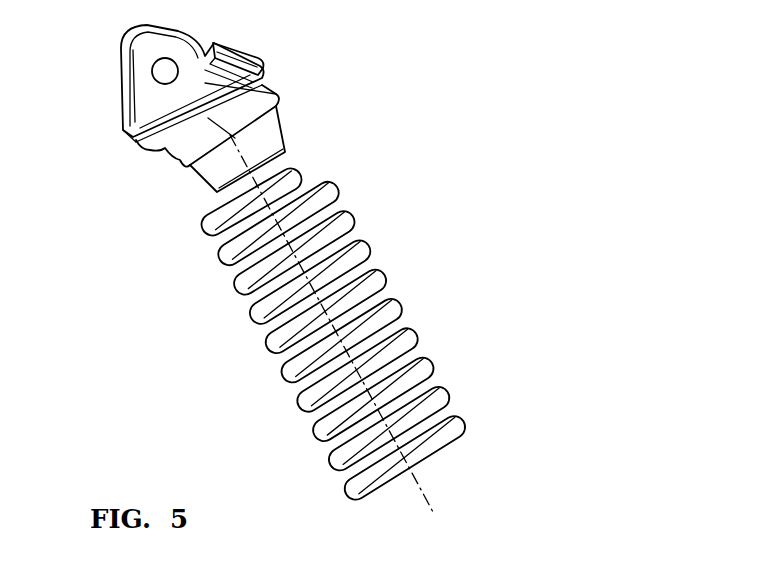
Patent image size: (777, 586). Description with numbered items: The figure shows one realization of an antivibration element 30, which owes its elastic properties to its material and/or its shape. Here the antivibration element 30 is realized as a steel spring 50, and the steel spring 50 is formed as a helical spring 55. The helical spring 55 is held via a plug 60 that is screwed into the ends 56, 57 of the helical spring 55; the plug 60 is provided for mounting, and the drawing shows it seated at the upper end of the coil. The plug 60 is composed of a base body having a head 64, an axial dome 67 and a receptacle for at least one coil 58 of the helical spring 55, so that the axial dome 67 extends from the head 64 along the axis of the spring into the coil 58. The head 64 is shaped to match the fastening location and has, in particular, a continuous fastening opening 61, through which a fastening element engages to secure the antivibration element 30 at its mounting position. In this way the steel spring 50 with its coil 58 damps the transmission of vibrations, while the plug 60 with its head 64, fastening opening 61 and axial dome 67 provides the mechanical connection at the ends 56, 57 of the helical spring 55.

The antivibration element 30 is at (387, 207).
The steel spring 50 is at (386, 268).
The helical spring 55 is at (277, 340).
The end of the helical spring 56 is at (452, 445).
The end of the helical spring 57 is at (222, 208).
The coil 58 is at (285, 178).
The plug 60 is at (247, 55).
The fastening opening 61 is at (158, 77).
The head 64 is at (152, 48).
The axial dome 67 is at (263, 147).